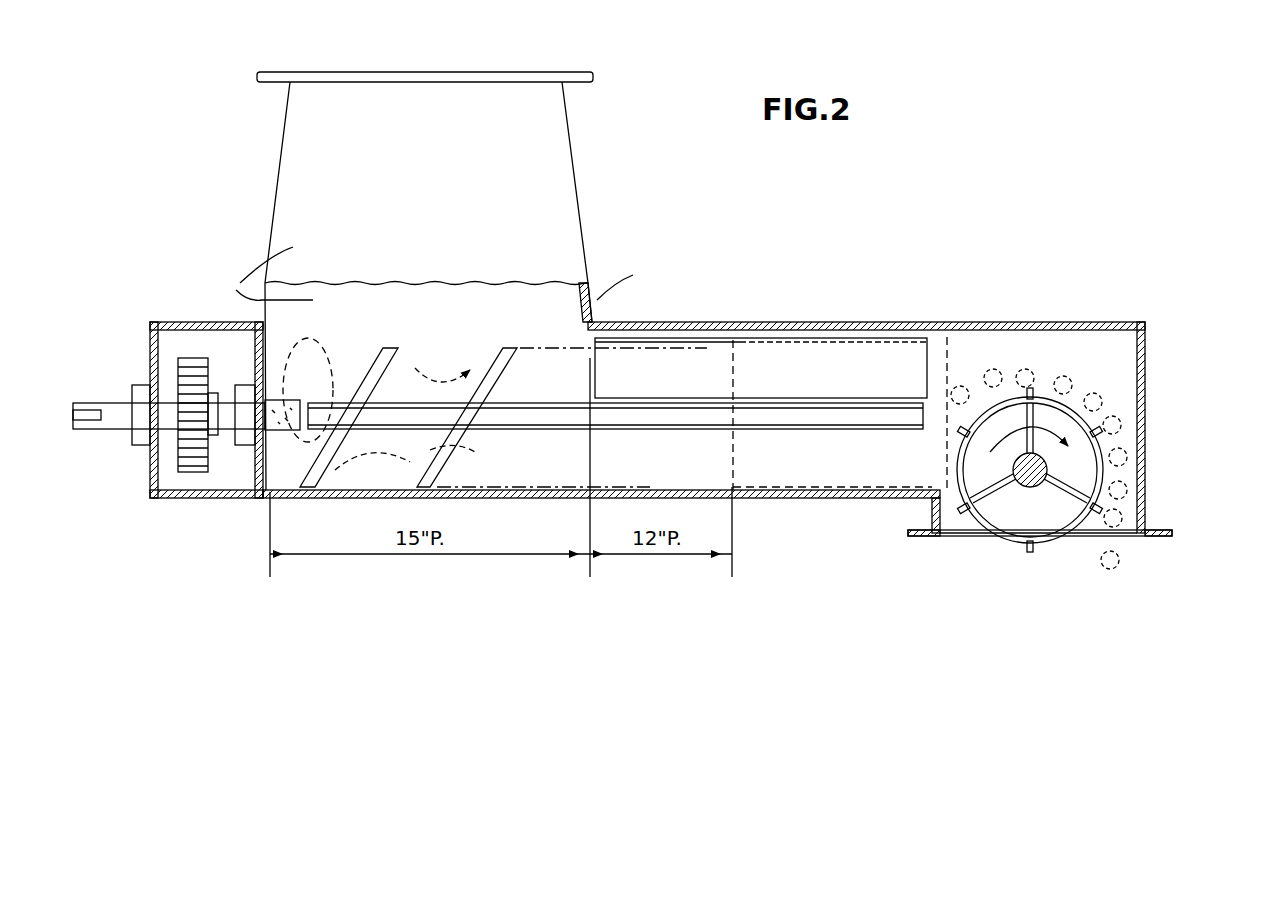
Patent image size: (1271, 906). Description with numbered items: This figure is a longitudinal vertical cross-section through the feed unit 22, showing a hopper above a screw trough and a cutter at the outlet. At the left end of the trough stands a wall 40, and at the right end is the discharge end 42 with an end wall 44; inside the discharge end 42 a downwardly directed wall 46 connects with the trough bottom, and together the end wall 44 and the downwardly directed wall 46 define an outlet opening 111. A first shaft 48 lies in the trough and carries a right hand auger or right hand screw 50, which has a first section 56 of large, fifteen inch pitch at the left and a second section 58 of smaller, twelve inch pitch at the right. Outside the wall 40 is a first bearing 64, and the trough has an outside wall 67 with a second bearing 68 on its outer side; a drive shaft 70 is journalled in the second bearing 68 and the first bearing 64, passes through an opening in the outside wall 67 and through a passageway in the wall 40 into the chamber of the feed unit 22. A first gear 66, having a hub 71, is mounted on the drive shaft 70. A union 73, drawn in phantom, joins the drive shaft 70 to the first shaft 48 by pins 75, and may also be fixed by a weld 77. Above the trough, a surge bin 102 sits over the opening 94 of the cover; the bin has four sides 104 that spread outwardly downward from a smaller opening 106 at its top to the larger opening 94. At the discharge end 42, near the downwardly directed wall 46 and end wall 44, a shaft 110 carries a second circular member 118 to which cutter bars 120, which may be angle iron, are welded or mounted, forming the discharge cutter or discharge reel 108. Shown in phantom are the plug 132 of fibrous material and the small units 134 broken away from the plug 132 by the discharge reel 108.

The feed unit 22 is at (760, 355).
The wall 40 is at (233, 494).
The discharge end 42 is at (1150, 410).
The end wall 44 is at (1147, 465).
The downwardly directed wall 46 is at (908, 528).
The first shaft 48 is at (870, 430).
The right hand auger 50 is at (485, 370).
The first section 56 is at (405, 465).
The second section 58 is at (667, 447).
The first bearing 64 is at (245, 393).
The first gear 66 is at (197, 360).
The outside wall 67 is at (143, 337).
The second bearing 68 is at (142, 392).
The drive shaft 70 is at (96, 405).
The hub 71 is at (218, 438).
The union 73 is at (293, 397).
The pins 75 is at (308, 387).
The weld 77 is at (393, 348).
The opening 94 is at (483, 325).
The surge bin 102 is at (415, 147).
The sides 104 is at (437, 273).
The opening 106 is at (355, 75).
The discharge reel 108 is at (1092, 420).
The shaft 110 is at (1010, 500).
The opening 111 is at (973, 537).
The second circular member 118 is at (1018, 453).
The cutter bars 120 is at (1075, 405).
The plug 132 is at (843, 515).
The small units 134 is at (967, 383).